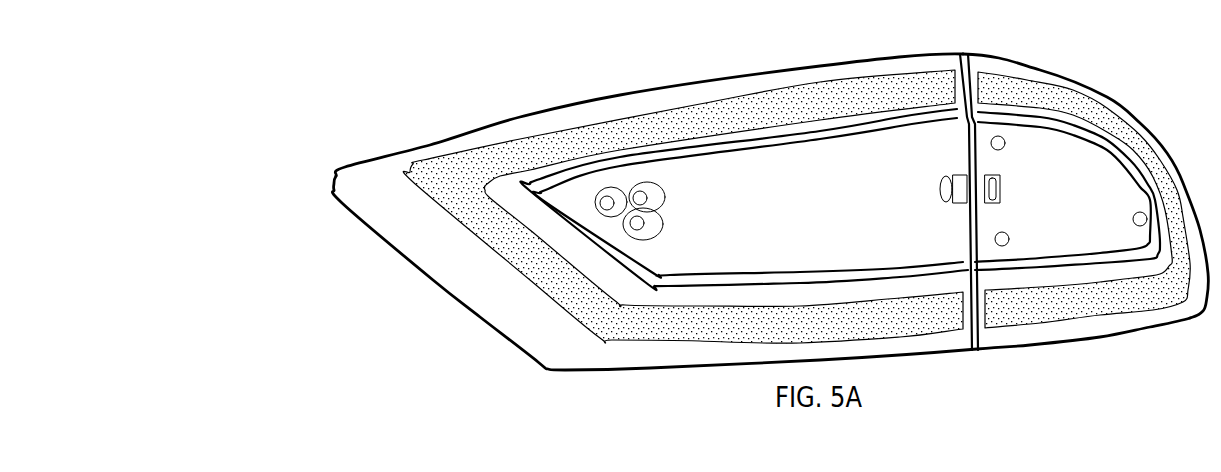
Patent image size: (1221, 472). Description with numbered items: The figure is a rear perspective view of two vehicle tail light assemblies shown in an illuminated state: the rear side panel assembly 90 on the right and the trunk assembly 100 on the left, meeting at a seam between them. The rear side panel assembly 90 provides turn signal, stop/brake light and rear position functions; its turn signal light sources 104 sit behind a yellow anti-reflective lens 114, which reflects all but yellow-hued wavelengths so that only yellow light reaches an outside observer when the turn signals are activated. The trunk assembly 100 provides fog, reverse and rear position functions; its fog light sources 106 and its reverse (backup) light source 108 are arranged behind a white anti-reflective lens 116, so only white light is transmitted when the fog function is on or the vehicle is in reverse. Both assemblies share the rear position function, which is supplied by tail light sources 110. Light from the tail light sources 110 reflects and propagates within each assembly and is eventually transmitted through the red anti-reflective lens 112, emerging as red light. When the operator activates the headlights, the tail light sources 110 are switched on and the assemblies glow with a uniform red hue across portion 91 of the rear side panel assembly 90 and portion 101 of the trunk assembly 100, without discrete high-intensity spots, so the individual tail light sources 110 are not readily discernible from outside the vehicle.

The vehicle tail light assembly (trunk) 100 is at (727, 75).
The vehicle tail light assembly (rear side panel) 90 is at (1108, 97).
The portion of tail light assembly 90 91 is at (1137, 290).
The portion of tail light assembly 100 101 is at (933, 315).
The turn signal light sources 104 is at (1005, 138).
The fog light sources 106 is at (617, 193).
The reverse (backup) light source 108 is at (653, 188).
The tail light sources 110 is at (937, 185).
The red anti-reflective lens 112 is at (465, 277).
The yellow anti-reflective lens 114 is at (1108, 195).
The white anti-reflective lens 116 is at (852, 237).